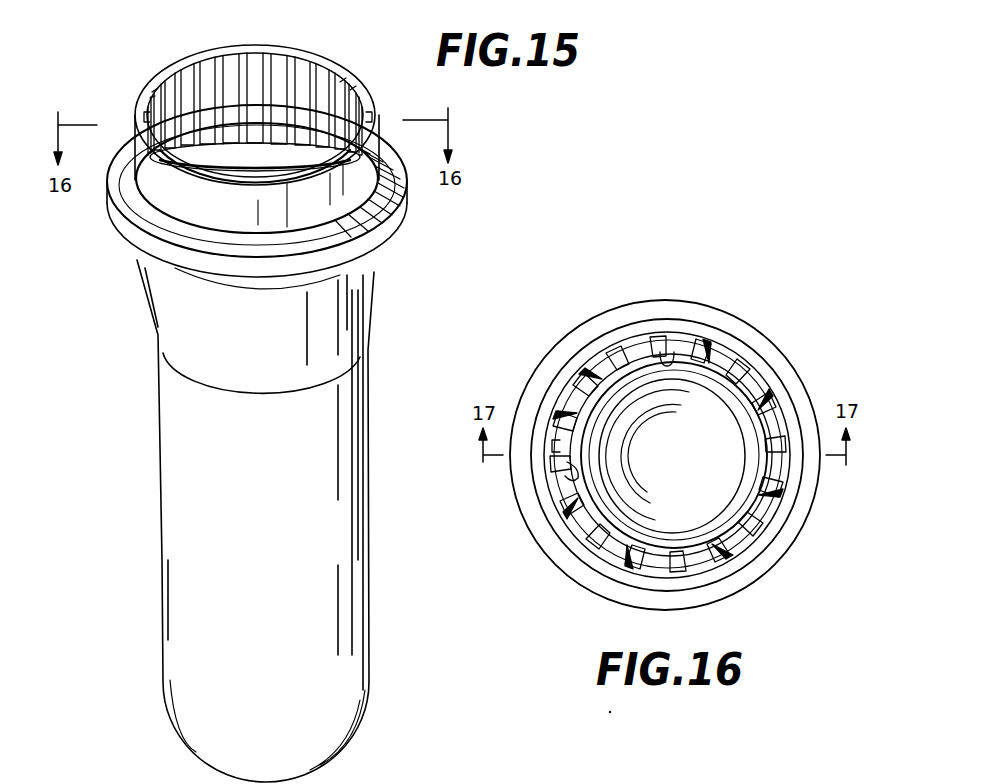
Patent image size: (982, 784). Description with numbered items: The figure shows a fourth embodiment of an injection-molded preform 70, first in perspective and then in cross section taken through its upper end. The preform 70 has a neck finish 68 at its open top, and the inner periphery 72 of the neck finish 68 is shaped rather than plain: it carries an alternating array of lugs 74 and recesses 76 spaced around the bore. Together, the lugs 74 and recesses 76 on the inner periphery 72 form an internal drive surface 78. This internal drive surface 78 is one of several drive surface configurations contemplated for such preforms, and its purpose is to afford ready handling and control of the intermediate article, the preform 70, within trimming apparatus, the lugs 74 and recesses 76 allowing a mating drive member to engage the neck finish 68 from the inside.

In FIG. 15, the neck finish 68 is at (185, 200).
In FIG. 16, the neck finish 68 is at (763, 507).
In FIG. 15, the preform 70 is at (375, 386).
In FIG. 16, the preform 70 is at (743, 587).
In FIG. 15, the inner periphery 72 is at (267, 77).
In FIG. 16, the inner periphery 72 is at (595, 525).
In FIG. 15, the lugs 74 is at (235, 78).
In FIG. 16, the lugs 74 is at (667, 358).
In FIG. 15, the recesses 76 is at (318, 75).
In FIG. 16, the recesses 76 is at (740, 367).
In FIG. 15, the internal drive surface 78 is at (187, 95).
In FIG. 16, the internal drive surface 78 is at (575, 472).